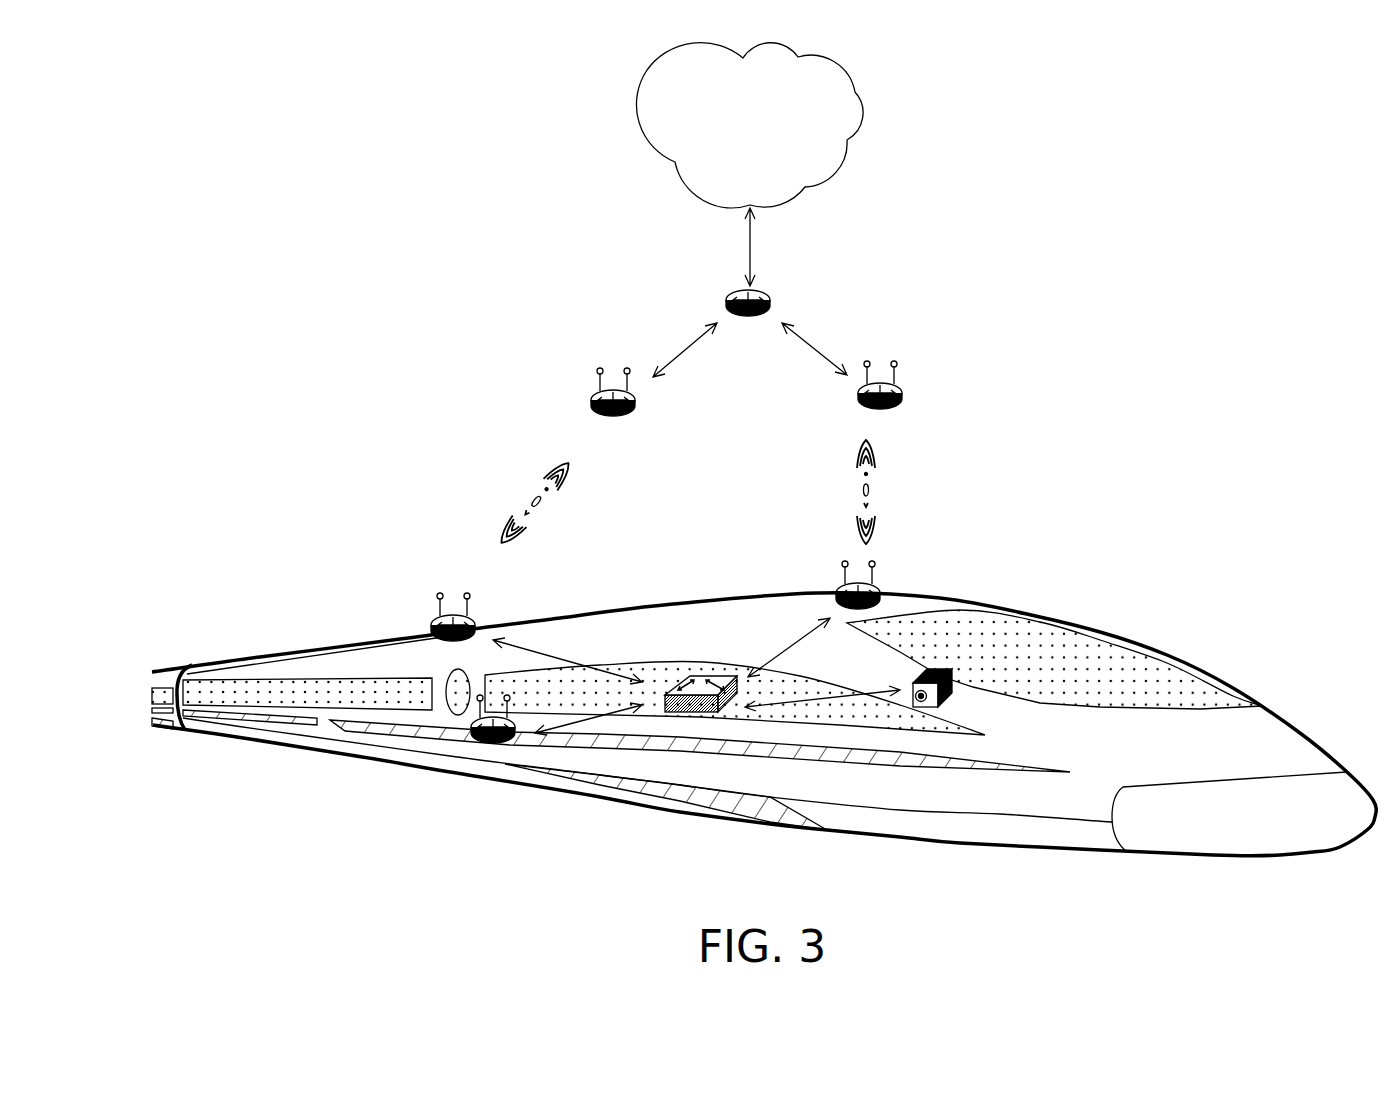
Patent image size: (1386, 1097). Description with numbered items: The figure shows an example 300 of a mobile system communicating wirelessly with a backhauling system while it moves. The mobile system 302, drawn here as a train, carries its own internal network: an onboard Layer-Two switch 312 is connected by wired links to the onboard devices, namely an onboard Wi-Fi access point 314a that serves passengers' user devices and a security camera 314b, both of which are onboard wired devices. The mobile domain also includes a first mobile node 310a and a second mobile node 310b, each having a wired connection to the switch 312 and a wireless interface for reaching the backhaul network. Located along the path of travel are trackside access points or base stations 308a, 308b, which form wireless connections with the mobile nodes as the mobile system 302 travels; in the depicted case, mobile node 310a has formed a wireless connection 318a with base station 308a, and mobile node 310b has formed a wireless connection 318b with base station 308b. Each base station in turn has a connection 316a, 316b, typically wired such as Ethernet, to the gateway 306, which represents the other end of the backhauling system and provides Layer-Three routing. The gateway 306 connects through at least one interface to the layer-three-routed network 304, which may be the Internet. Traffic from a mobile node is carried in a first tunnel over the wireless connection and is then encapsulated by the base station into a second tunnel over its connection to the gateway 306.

The example of a mobile system communicating wirelessly 300 is at (1313, 115).
The mobile system 302 is at (1098, 630).
The L3-routed network 304 is at (733, 164).
The gateway (GW) 306 is at (773, 297).
The trackside access point/base station 308a is at (902, 390).
The trackside access point/base station 308b is at (592, 397).
The first mobile node (MN) 310a is at (880, 594).
The second mobile node (MN) 310b is at (435, 622).
The Layer-2 (L2) switch 312 is at (703, 676).
The onboard device (onboard Wi-Fi access point) 314a is at (493, 748).
The onboard device (security camera) 314b is at (943, 707).
The connection between base station and gateway 316a is at (837, 337).
The connection between base station and gateway 316b is at (661, 338).
The wireless connection 318a is at (921, 491).
The wireless connection 318b is at (545, 433).